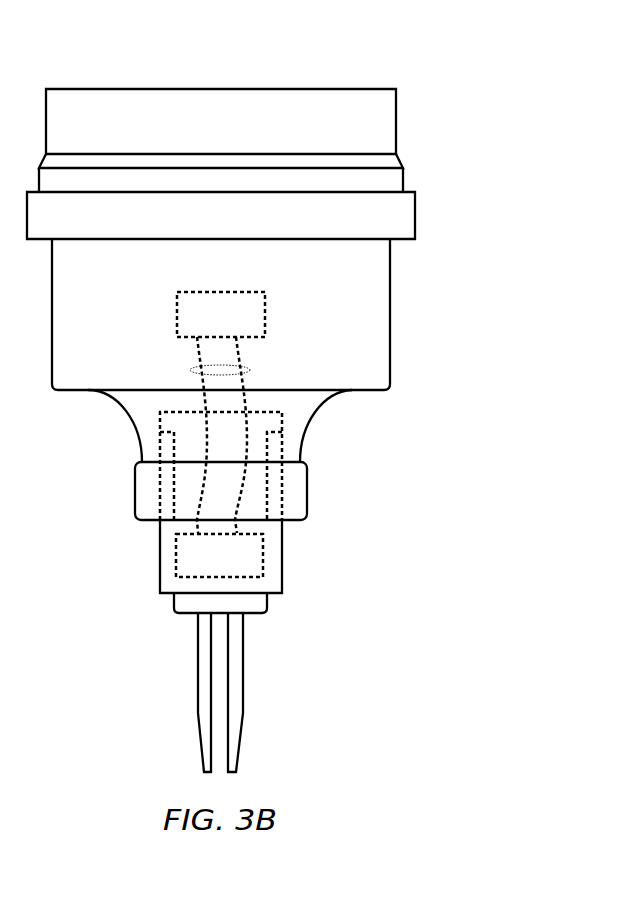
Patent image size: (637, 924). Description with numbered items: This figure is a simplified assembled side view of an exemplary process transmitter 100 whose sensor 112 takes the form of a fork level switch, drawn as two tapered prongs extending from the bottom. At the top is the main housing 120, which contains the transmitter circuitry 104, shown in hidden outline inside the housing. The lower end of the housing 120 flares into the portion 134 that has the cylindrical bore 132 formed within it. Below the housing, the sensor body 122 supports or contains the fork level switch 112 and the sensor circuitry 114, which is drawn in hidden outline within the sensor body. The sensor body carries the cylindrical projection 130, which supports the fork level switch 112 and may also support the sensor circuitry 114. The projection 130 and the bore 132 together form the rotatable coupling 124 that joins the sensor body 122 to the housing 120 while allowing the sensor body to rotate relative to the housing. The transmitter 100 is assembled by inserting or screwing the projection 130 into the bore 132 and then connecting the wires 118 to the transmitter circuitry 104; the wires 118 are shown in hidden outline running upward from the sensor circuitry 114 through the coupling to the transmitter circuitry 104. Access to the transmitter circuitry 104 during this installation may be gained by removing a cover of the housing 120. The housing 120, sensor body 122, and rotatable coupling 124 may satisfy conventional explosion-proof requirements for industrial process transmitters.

The process transmitter 100 is at (356, 48).
The main housing 120 is at (160, 108).
The transmitter circuitry 104 is at (263, 293).
The wires 118 is at (190, 368).
The portion having the bore 134 is at (128, 413).
The cylindrical bore 132 is at (268, 424).
The cylindrical projection 130 is at (272, 498).
The rotatable coupling 124 is at (95, 540).
The sensor body 122 is at (277, 586).
The sensor circuitry 114 is at (187, 562).
The sensor 112 is at (175, 727).